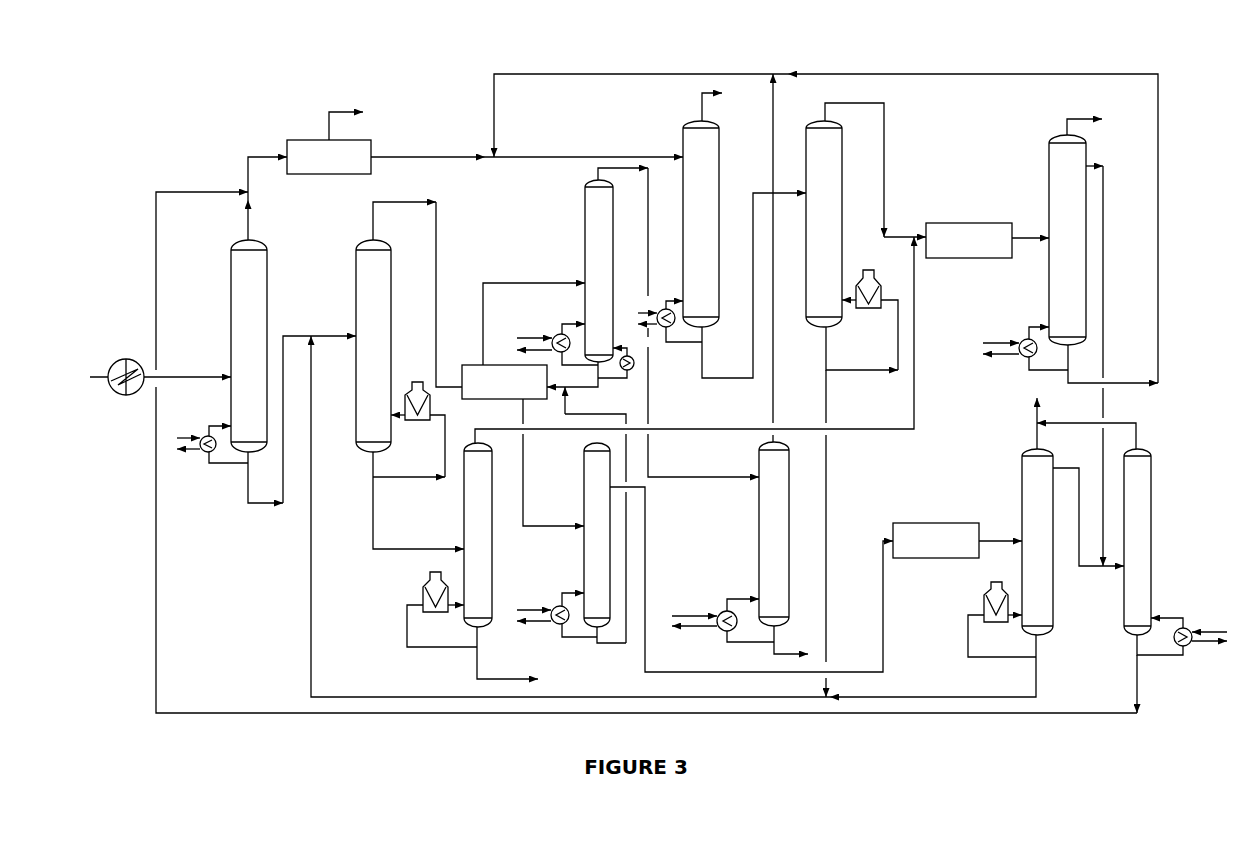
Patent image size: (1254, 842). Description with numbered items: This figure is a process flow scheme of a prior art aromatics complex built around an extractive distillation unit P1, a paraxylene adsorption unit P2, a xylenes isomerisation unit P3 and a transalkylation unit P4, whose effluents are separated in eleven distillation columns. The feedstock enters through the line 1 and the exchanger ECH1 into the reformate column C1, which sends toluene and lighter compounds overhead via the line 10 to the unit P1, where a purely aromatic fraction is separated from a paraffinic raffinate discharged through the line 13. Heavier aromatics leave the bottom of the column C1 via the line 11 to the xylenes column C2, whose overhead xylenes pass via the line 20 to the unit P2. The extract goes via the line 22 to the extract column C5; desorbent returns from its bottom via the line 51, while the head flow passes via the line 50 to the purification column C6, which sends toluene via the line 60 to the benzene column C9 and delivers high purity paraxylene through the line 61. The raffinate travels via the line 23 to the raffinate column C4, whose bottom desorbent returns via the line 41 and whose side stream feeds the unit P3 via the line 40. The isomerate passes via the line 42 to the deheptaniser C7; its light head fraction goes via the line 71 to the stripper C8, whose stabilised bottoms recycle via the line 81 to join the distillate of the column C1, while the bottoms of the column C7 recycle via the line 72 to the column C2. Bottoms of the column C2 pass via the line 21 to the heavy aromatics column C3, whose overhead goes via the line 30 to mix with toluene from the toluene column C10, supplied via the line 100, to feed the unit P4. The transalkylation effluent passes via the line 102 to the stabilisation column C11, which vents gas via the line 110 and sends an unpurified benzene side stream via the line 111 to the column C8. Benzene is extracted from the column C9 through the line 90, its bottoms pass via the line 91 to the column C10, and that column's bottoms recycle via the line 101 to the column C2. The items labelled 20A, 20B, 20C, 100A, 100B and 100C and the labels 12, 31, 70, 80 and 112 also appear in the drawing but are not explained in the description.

The line 1 is at (159, 369).
The exchanger ECH1 is at (121, 389).
The reformate column C1 is at (249, 346).
The xylenes column C2 is at (373, 346).
The heavy aromatics column C3 is at (478, 535).
The raffinate column C4 is at (597, 535).
The extract column C5 is at (599, 271).
The purification column C6 is at (774, 534).
The deheptaniser C7 is at (1037, 542).
The stripper C8 is at (1137, 542).
The benzene column C9 is at (701, 224).
The toluene column C10 is at (824, 224).
The stabilisation column C11 is at (1067, 240).
The extractive distillation unit P1 is at (329, 157).
The paraxylene adsorption unit P2 is at (504, 382).
The xylenes isomerisation unit P3 is at (936, 540).
The transalkylation unit P4 is at (969, 240).
The line 10 is at (267, 198).
The line 11 is at (302, 433).
The P1 outlet stream 12 is at (764, 228).
The line 13 is at (346, 118).
The line 20 is at (417, 286).
The C1 condenser 20A is at (211, 443).
The C4 condenser 20B is at (557, 615).
The C5 condenser 20C is at (557, 343).
The line 21 is at (418, 500).
The line 22 is at (534, 316).
The line 23 is at (553, 462).
The line 30 is at (694, 340).
The C3 bottoms stream 31 is at (507, 653).
The line 40 is at (751, 579).
The line 41 is at (611, 645).
The line 42 is at (1000, 533).
The line 50 is at (678, 323).
The line 51 is at (590, 495).
The line 60 is at (783, 258).
The line 61 is at (791, 640).
The C7 overhead stream 70 is at (1025, 423).
The line 71 is at (1088, 509).
The line 72 is at (673, 518).
The C8 overhead stream 80 is at (1086, 429).
The line 81 is at (646, 452).
The line 90 is at (699, 107).
The line 91 is at (754, 286).
The line 100 is at (875, 170).
The C9 condenser 100A is at (662, 321).
The C6 condenser 100B is at (723, 619).
The condenser 100C is at (1103, 491).
The line 101 is at (841, 533).
The line 102 is at (1030, 230).
The line 110 is at (1084, 118).
The line 111 is at (1105, 356).
The C11 bottoms stream 112 is at (1113, 364).